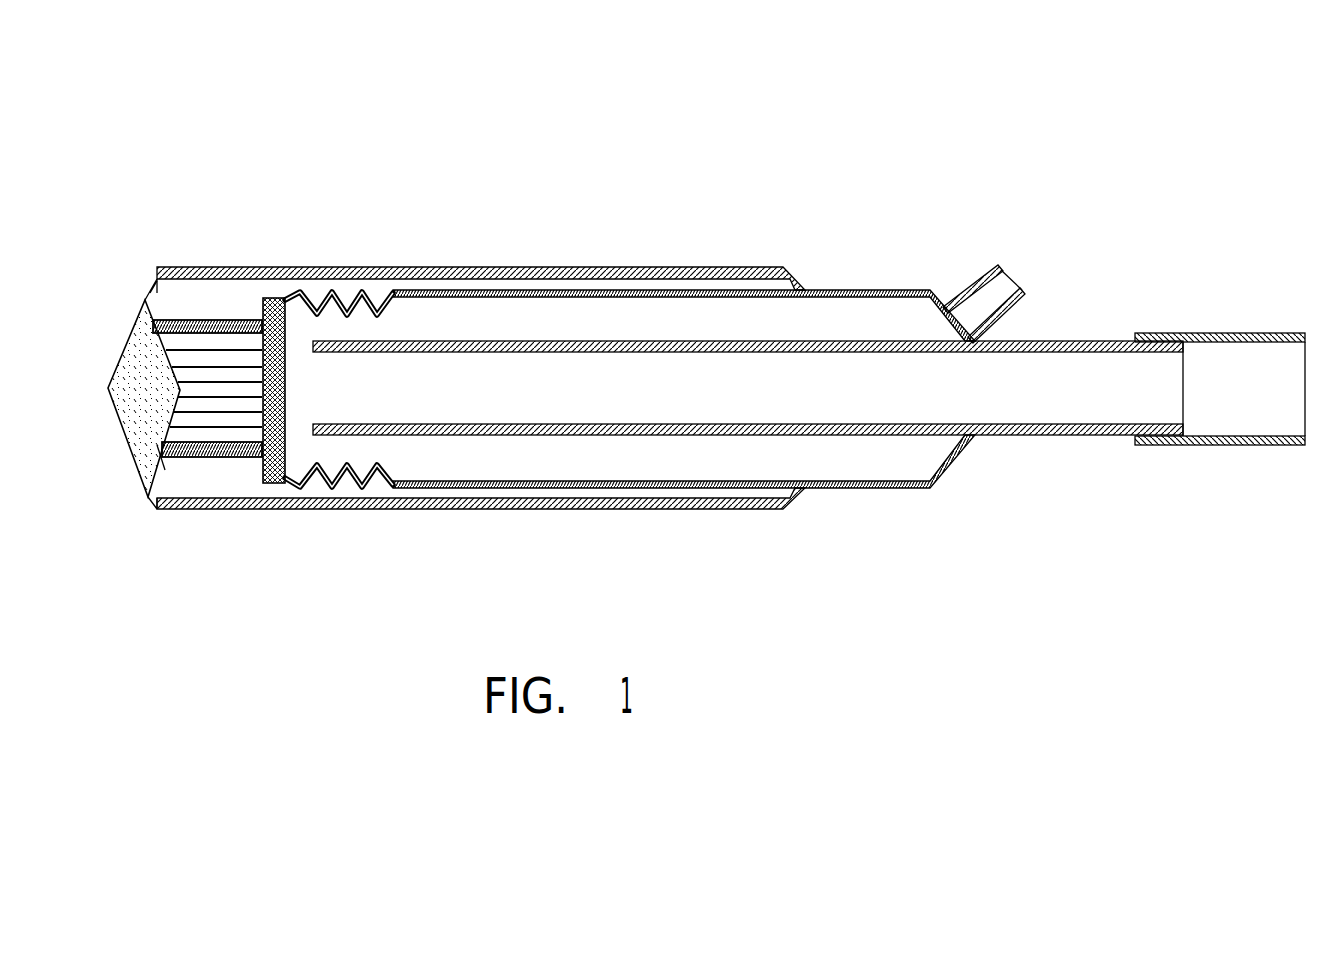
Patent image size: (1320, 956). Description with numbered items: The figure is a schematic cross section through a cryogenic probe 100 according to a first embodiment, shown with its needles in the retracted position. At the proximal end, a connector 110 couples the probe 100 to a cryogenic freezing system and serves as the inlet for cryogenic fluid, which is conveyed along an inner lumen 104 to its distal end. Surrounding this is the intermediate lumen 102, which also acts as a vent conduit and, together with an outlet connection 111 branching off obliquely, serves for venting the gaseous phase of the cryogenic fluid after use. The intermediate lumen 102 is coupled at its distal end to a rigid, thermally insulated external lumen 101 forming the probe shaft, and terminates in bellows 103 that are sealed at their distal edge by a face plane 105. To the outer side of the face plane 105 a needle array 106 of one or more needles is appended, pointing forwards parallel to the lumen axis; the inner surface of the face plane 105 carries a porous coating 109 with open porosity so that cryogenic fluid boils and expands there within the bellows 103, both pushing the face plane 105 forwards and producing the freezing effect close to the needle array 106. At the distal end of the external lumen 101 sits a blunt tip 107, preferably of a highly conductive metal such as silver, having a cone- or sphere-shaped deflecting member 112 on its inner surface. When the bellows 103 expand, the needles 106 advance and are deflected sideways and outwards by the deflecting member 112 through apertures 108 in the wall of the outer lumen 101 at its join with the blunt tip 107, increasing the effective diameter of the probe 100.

The cryogenic probe 100 is at (612, 226).
The external lumen 101 is at (437, 509).
The intermediate lumen 102 is at (460, 293).
The bellows 103 is at (330, 480).
The inner lumen 104 is at (620, 341).
The face plane 105 is at (250, 467).
The needle array 106 is at (217, 312).
The blunt tip 107 is at (127, 423).
The apertures 108 is at (153, 280).
The porous coating 109 is at (285, 312).
The connector 110 is at (1238, 447).
The outlet connection 111 is at (972, 278).
The deflecting member 112 is at (152, 462).